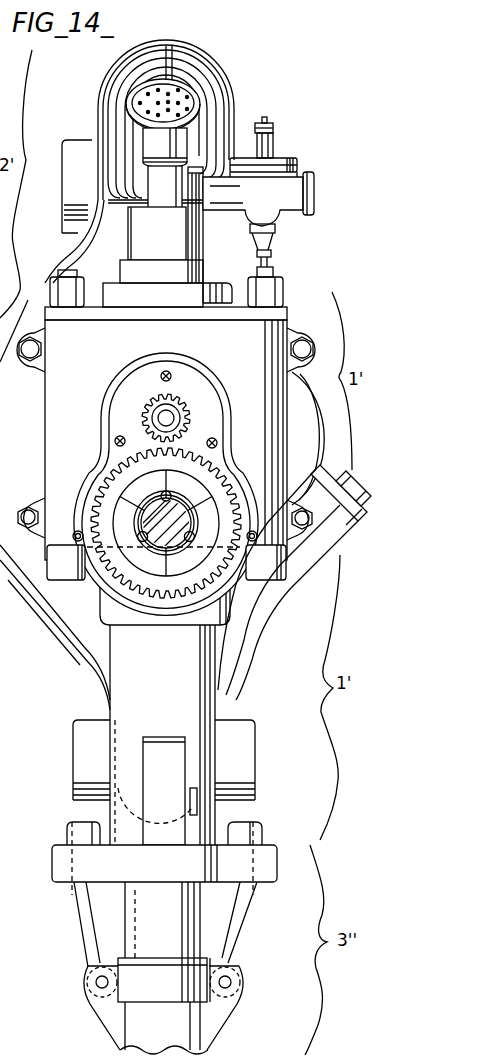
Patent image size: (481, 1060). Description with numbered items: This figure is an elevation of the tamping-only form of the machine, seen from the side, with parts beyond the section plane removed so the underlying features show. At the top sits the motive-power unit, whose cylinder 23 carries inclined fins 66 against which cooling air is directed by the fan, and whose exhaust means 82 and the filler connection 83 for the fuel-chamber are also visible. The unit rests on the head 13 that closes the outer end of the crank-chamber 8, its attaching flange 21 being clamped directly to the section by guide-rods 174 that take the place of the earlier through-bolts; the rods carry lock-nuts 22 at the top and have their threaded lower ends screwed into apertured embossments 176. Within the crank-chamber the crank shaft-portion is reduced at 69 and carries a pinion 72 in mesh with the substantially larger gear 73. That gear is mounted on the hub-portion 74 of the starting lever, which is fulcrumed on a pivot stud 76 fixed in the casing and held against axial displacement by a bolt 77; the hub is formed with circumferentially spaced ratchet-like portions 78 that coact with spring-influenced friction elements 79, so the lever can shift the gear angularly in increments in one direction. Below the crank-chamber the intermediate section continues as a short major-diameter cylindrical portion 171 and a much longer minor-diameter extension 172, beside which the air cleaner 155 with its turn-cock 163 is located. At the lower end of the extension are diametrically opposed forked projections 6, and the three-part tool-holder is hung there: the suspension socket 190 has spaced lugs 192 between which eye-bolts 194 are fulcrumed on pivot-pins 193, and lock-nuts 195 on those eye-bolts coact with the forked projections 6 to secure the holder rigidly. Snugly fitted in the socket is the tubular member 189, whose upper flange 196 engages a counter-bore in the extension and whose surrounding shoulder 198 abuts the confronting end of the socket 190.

The inclined fins 66 is at (229, 120).
The exhaust means 82 is at (200, 97).
The cylinder 23 is at (153, 257).
The attaching flange 21 is at (222, 285).
The guide-rods 174 is at (268, 267).
The lock-nuts 22 is at (283, 290).
The head 13 is at (290, 313).
The crank-chamber 8 is at (170, 440).
The major-diameter cylindrical portion 171 is at (108, 600).
The gear 73 is at (113, 468).
The pinion 72 is at (143, 400).
The reduced part of shaft-portion 69 is at (167, 421).
The ratchet-like portions 78 is at (143, 508).
The pivot stud 76 is at (197, 513).
The hub-portion 74 is at (153, 503).
The bolt 77 is at (138, 528).
The friction elements 79 is at (167, 492).
The apertured embossments 176 is at (50, 556).
The filler connection 83 is at (262, 612).
The minor-diameter portion 172 is at (162, 735).
The cleaner 155 is at (155, 791).
The turn-cock 163 is at (190, 810).
The forked projections 6 is at (52, 865).
The lock-nuts 195 is at (67, 833).
The upper flange 196 is at (162, 920).
The tubular member 189 is at (155, 924).
The suspension socket 190 is at (163, 1006).
The eye-bolts 194 is at (84, 913).
The surrounding shoulder 198 is at (205, 958).
The lugs 192 is at (106, 1017).
The pivot-pins 193 is at (92, 982).